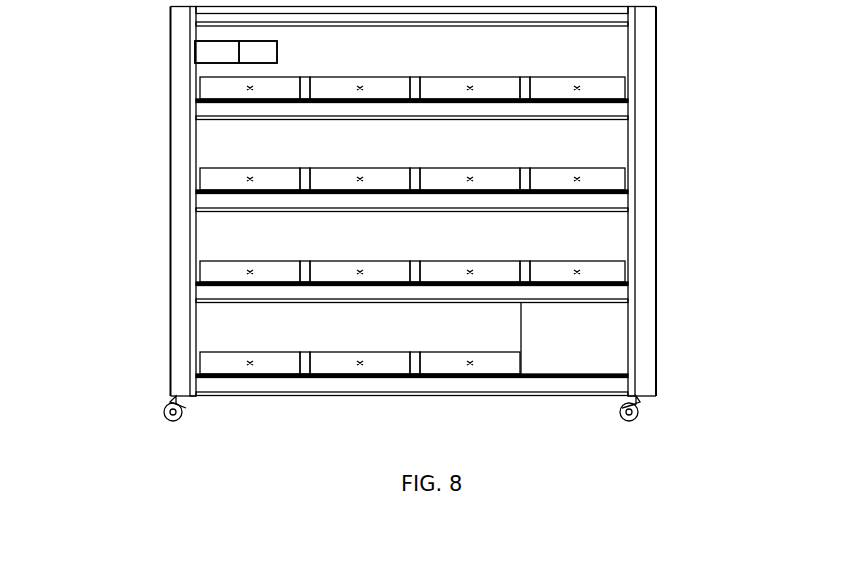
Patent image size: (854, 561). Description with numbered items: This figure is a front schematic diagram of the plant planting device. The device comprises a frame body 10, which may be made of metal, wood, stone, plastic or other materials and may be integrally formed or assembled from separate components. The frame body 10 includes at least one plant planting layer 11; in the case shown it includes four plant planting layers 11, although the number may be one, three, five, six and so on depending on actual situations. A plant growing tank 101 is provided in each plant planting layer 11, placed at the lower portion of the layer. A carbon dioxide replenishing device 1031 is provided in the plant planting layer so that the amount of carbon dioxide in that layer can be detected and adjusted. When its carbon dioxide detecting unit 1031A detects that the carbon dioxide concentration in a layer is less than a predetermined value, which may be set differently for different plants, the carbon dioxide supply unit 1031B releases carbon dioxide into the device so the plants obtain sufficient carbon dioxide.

The frame body 10 is at (645, 125).
The plant growing tank 101 is at (617, 182).
The plant planting layer 11 is at (615, 233).
The carbon dioxide replenishing device 1031 is at (162, 68).
The carbon dioxide detecting unit 1031A is at (223, 56).
The carbon dioxide supply unit 1031B is at (244, 56).